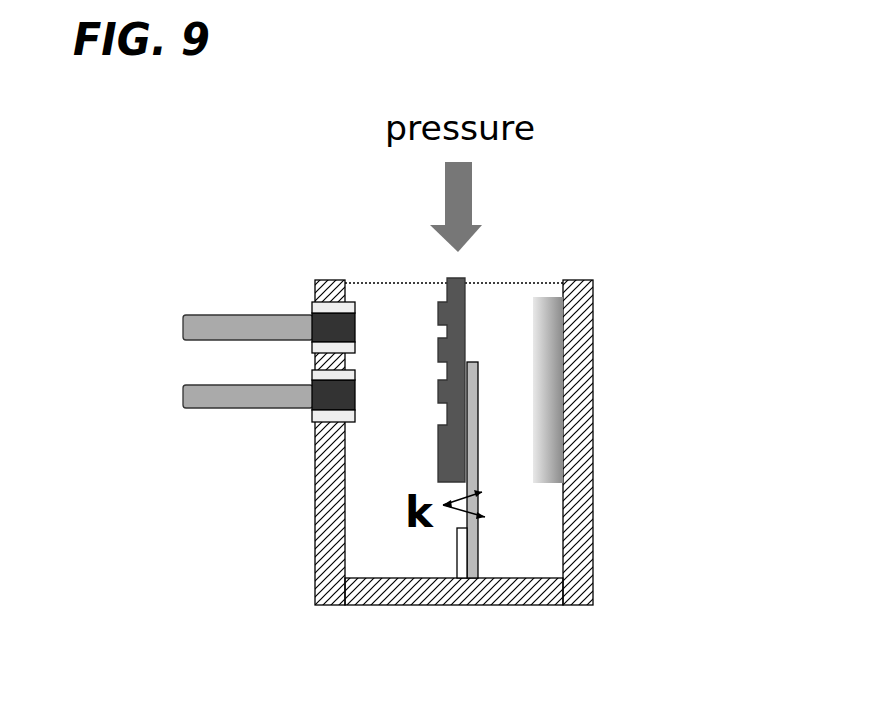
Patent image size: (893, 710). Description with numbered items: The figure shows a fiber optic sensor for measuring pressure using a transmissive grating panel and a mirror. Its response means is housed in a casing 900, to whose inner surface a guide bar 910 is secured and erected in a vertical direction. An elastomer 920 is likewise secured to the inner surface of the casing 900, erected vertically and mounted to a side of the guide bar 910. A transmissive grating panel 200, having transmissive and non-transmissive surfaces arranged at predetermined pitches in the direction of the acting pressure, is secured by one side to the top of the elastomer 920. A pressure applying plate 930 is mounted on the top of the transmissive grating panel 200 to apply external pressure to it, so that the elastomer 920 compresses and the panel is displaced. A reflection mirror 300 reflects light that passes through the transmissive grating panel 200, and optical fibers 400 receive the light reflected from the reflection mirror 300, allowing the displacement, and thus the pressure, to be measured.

The transmissive grating panel 200 is at (467, 322).
The reflection mirror 300 is at (540, 407).
The optical fibers 400 is at (183, 330).
The casing 900 is at (593, 523).
The guide bar 910 is at (565, 578).
The elastomer 920 is at (455, 518).
The pressure applying plate 930 is at (492, 283).